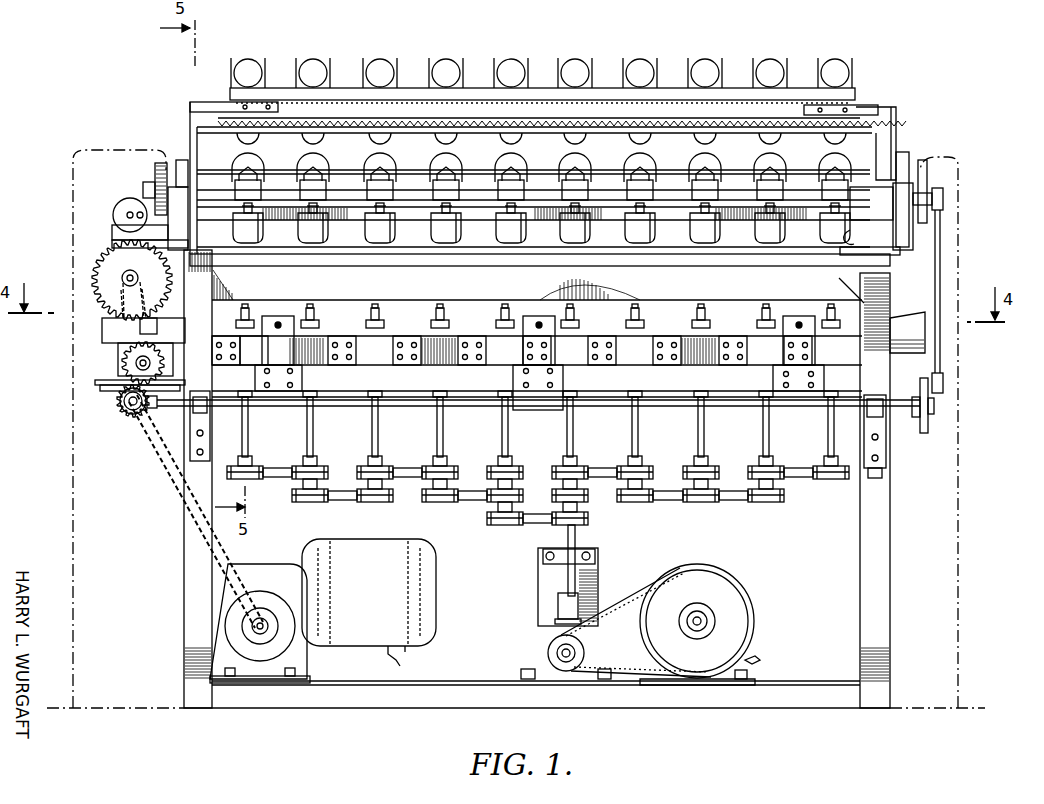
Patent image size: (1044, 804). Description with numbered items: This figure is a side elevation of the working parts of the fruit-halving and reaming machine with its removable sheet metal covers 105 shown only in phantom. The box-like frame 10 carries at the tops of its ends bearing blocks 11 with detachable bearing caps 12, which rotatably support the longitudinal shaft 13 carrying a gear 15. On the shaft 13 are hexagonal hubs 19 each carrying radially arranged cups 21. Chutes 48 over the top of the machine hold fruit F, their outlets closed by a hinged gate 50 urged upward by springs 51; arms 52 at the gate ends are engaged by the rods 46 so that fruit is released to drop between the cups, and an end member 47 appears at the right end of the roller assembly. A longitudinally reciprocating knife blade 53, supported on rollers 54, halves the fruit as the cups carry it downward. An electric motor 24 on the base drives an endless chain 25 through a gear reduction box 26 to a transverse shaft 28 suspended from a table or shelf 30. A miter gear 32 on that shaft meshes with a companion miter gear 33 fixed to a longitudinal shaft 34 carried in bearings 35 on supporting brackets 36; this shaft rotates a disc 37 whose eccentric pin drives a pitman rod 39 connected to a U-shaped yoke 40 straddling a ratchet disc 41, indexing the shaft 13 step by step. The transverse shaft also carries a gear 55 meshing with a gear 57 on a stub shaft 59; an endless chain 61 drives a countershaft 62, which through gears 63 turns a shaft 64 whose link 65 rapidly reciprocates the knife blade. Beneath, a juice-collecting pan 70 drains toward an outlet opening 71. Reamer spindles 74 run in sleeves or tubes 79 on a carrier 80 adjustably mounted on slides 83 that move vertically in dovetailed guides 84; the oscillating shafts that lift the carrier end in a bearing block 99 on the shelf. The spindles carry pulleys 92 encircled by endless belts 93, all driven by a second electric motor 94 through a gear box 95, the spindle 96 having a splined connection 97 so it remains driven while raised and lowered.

The fruit F is at (508, 66).
The frame 10 is at (889, 543).
The bearing blocks 11 is at (920, 238).
The detachable bearing caps 12 is at (178, 185).
The shaft 13 is at (343, 186).
The gear 15 is at (154, 176).
The hexagonal hubs 19 is at (450, 186).
The cups 21 is at (556, 166).
The electric motor 24 is at (400, 570).
The endless chain 25 is at (170, 498).
The gear reduction box 26 is at (302, 660).
The transversely extending shaft 28 is at (118, 403).
The table or shelf 30 is at (97, 382).
The miter gear 32 is at (131, 411).
The companion miter gear 33 is at (156, 418).
The longitudinally extending shaft 34 is at (476, 407).
The bearings 35 is at (202, 404).
The supporting brackets 36 is at (878, 462).
The disc 37 is at (930, 428).
The pitman rod 39 is at (941, 356).
The U-shaped yoke 40 is at (936, 186).
The ratchet disc 41 is at (922, 160).
The rods 46 is at (799, 178).
The end block 47 is at (875, 200).
The chutes 48 is at (855, 80).
The hinged gate 50 is at (240, 126).
The springs 51 is at (862, 114).
The arms 52 is at (886, 137).
The knife blade 53 is at (678, 218).
The rollers 54 is at (870, 252).
The gear 55 is at (121, 410).
The gear 57 is at (124, 358).
The stub shaft 59 is at (136, 364).
The endless chain 61 is at (121, 300).
The countershaft 62 is at (122, 276).
The gears 63 is at (100, 258).
The shaft 64 is at (127, 214).
The link 65 is at (140, 211).
The juice-collecting pan 70 is at (538, 286).
The outlet opening 71 is at (902, 318).
The reamer spindles 74 is at (437, 438).
The sleeves or tubes 79 is at (380, 336).
The carrier 80 is at (565, 348).
The slides 83 is at (275, 345).
The dovetailed guides 84 is at (284, 408).
The pulleys 92 is at (320, 464).
The endless belts 93 is at (274, 468).
The second electric motor 94 is at (720, 594).
The gear box 95 is at (546, 646).
The spindle 96 is at (578, 543).
The splined connection 97 is at (574, 580).
The bearing block 99 is at (110, 339).
The removable sheet metal covers 105 is at (73, 512).